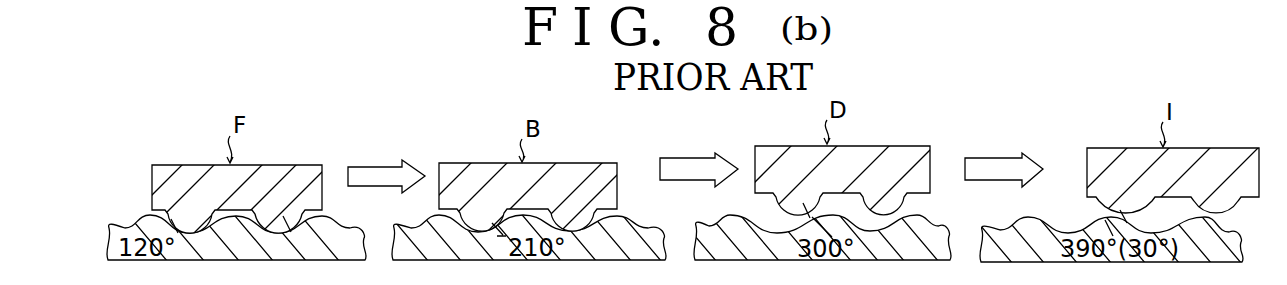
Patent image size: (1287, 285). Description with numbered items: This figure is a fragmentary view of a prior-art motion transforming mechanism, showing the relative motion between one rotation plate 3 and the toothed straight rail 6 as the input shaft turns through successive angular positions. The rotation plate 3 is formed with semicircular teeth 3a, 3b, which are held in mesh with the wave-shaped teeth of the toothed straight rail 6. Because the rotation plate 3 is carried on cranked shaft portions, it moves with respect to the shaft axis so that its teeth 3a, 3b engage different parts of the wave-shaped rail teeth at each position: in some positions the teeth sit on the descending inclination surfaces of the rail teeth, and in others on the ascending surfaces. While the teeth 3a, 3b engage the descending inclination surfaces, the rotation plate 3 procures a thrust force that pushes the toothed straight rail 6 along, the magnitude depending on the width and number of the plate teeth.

The rotation plate 3 is at (152, 182).
The tooth 3a is at (292, 234).
The tooth 3b is at (197, 220).
The toothed straight rail 6 is at (108, 245).